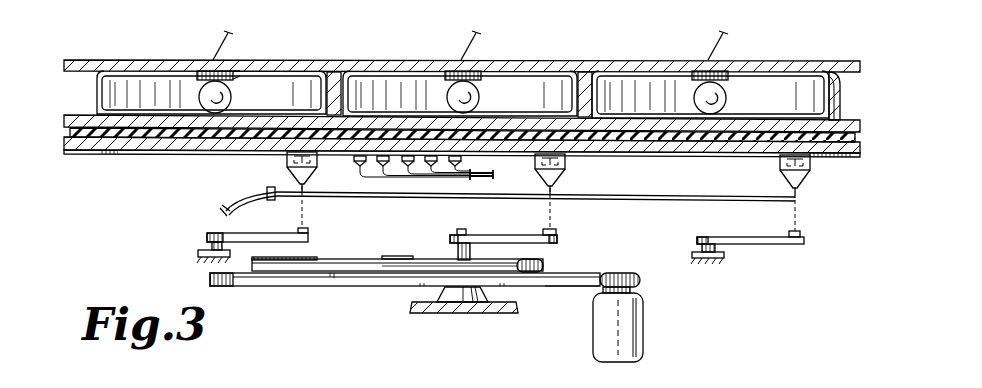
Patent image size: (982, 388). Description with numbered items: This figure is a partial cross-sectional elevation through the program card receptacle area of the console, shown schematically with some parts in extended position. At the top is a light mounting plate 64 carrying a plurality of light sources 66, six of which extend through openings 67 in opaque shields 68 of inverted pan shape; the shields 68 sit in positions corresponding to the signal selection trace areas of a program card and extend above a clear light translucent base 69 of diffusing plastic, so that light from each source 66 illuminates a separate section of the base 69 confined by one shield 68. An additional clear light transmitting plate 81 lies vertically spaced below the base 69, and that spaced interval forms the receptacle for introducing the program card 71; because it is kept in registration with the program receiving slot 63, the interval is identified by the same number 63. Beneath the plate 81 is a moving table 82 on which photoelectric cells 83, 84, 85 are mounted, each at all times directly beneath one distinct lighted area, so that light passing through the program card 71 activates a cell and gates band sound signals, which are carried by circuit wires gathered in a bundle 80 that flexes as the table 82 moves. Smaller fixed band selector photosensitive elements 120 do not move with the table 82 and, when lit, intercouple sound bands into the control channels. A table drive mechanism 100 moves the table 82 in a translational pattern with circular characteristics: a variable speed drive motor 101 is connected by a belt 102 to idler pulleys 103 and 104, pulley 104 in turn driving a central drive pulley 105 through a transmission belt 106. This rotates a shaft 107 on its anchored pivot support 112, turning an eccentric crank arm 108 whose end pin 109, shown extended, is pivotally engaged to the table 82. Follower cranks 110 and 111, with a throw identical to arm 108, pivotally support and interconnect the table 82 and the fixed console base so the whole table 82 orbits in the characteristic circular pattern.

The program receiving slot 63 is at (67, 131).
The light mounting plate 64 is at (592, 62).
The light sources 66 is at (201, 92).
The openings 67 is at (240, 70).
The opaque shields 68 is at (110, 90).
The clear light translucent base 69 is at (802, 127).
The program card 71 is at (197, 133).
The bundle of circuit wires 80 is at (226, 208).
The clear light transmitting plate 81 is at (140, 143).
The moving table 82 is at (93, 154).
The photoelectric cell 83 is at (286, 162).
The photoelectric cell 84 is at (563, 163).
The photoelectric cell 85 is at (779, 166).
The table drive mechanism 100 is at (390, 291).
The variable speed drive motor 101 is at (634, 318).
The belt 102 is at (537, 287).
The idler pulley 103 is at (272, 287).
The idler pulley 104 is at (308, 258).
The central drive pulley 105 is at (533, 262).
The transmission belt 106 is at (375, 264).
The shaft 107 is at (457, 252).
The eccentric crank arm 108 is at (502, 237).
The pin 109 is at (555, 230).
The follower crank 110 is at (277, 233).
The follower crank 111 is at (767, 244).
The anchored pivot support 112 is at (463, 300).
The band selector photosensitive elements 120 is at (462, 158).